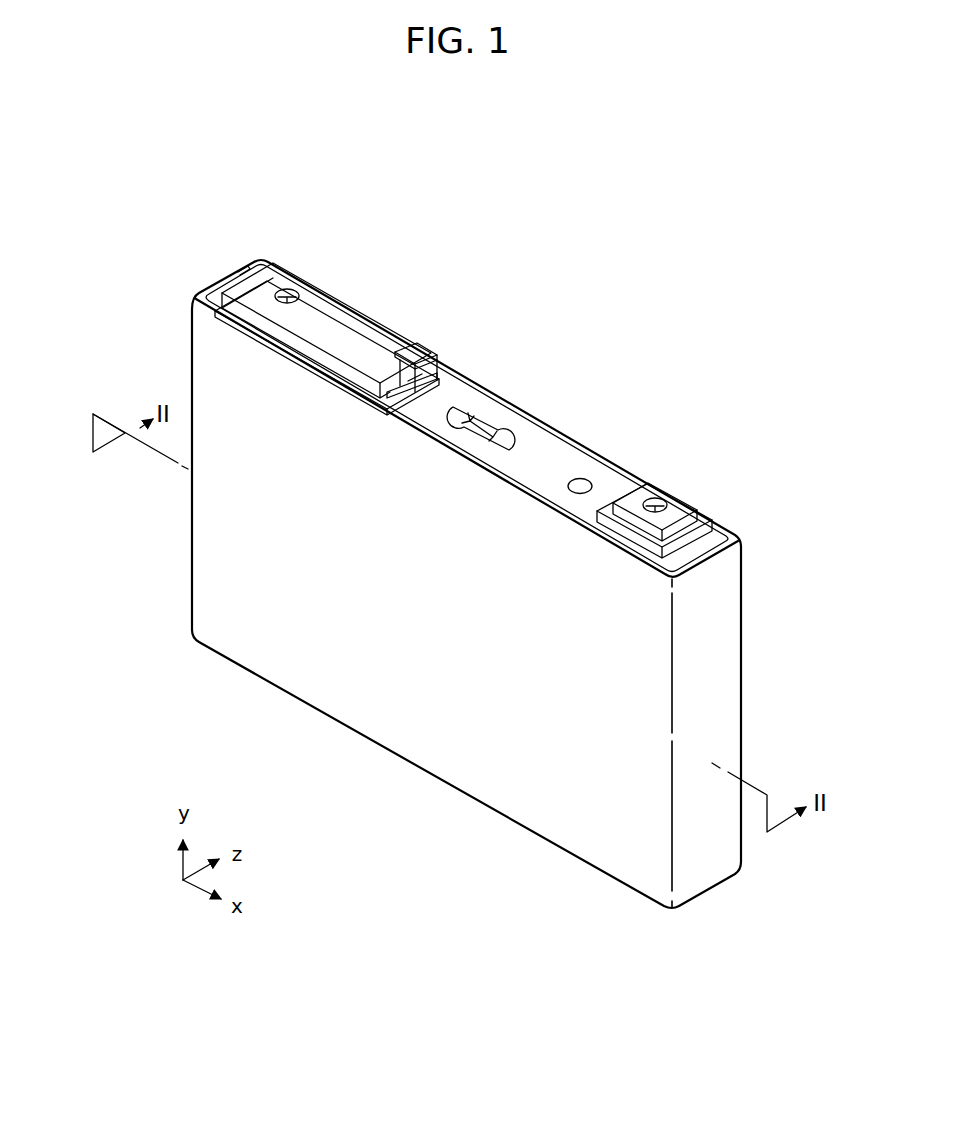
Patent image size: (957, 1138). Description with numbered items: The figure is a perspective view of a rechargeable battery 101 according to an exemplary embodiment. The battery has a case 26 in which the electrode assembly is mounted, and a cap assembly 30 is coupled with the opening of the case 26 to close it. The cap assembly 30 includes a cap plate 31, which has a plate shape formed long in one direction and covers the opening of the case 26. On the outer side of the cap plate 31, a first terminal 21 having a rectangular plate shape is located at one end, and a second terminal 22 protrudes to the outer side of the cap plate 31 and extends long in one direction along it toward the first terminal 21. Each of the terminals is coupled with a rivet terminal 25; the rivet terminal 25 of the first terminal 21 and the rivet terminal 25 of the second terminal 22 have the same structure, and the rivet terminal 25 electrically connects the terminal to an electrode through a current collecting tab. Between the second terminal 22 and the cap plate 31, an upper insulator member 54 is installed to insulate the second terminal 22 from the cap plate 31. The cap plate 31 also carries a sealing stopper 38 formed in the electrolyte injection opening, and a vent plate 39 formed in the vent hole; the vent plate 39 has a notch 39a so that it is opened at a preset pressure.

The rechargeable battery 101 is at (519, 225).
The first terminal 21 is at (680, 510).
The second terminal 22 is at (328, 312).
The rivet terminal 25 is at (288, 292).
The case 26 is at (414, 733).
The cap assembly 30 is at (563, 427).
The cap plate 31 is at (441, 387).
The sealing stopper 38 is at (583, 487).
The vent plate 39 is at (477, 412).
The notch 39a is at (491, 433).
The upper insulator member 54 is at (391, 330).